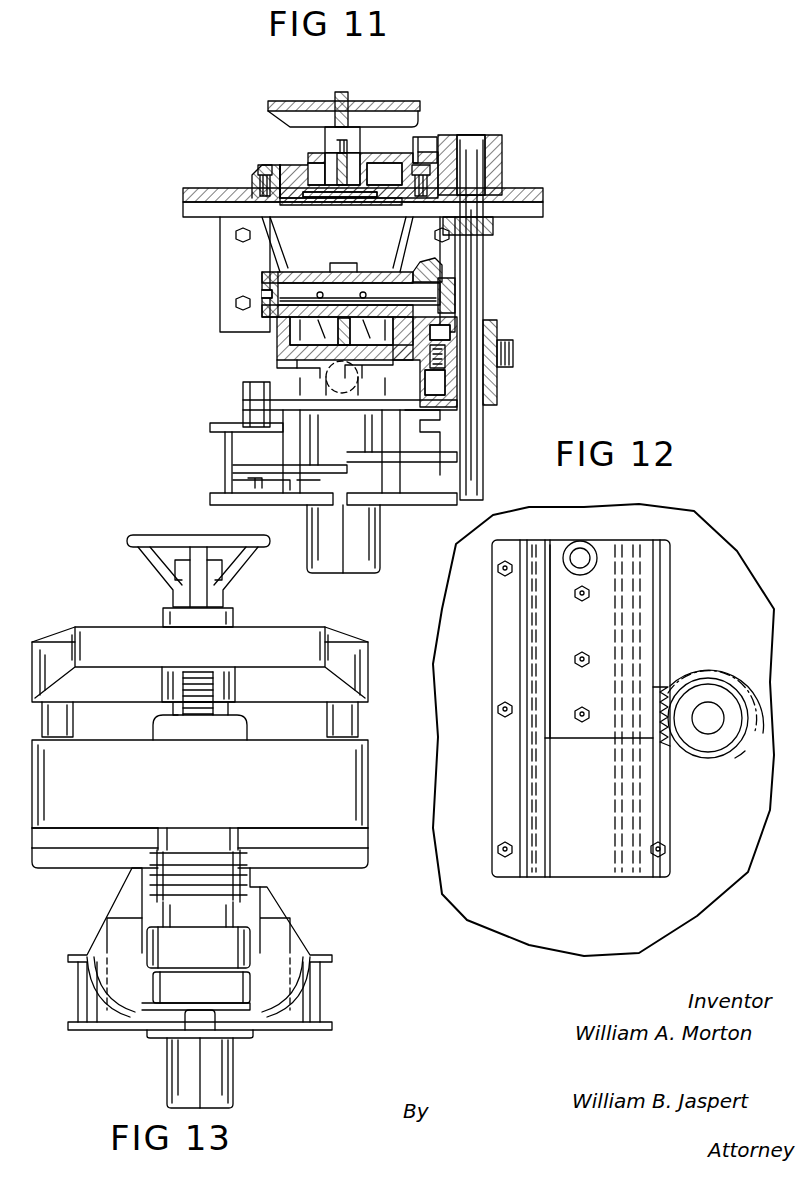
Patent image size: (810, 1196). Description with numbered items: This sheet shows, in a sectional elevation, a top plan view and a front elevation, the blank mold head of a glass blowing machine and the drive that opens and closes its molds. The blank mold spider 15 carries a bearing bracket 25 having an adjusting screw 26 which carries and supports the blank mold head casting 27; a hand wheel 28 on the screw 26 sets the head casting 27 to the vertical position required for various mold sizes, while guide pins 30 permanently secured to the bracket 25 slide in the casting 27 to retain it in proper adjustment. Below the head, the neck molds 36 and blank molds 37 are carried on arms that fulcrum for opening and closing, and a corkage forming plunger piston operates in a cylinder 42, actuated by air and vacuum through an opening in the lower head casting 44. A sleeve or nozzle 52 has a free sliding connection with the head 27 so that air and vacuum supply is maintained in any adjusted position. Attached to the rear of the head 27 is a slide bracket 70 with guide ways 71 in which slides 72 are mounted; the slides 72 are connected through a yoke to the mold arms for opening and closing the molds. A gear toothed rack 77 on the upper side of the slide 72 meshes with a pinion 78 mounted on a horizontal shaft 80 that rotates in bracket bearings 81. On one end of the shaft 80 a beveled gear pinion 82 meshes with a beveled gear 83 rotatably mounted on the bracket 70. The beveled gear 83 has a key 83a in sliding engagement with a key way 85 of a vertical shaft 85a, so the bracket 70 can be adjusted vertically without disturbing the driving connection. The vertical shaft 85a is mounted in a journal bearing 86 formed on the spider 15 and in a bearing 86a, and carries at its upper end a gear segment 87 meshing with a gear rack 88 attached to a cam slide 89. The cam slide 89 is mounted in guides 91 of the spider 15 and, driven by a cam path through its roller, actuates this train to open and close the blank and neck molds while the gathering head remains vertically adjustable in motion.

In FIG. 11, the blank mold spider 15 is at (525, 190).
In FIG. 13, the bearing bracket 25 is at (330, 645).
In FIG. 13, the adjusting screw 26 is at (215, 710).
In FIG. 13, the blank mold head casting 27 is at (280, 750).
In FIG. 13, the hand wheel 28 is at (145, 537).
In FIG. 13, the guide pins 30 is at (90, 722).
In FIG. 13, the neck molds 36 is at (160, 986).
In FIG. 11, the blank molds 37 is at (378, 548).
In FIG. 13, the blank molds 37 is at (170, 1058).
In FIG. 13, the cylinder 42 is at (215, 878).
In FIG. 13, the lower head casting 44 is at (270, 910).
In FIG. 13, the sleeve or nozzle 52 is at (172, 712).
In FIG. 11, the slide bracket 70 is at (290, 245).
In FIG. 11, the guide ways 71 is at (277, 340).
In FIG. 11, the slides 72 is at (280, 362).
In FIG. 11, the gear toothed rack 77 is at (365, 305).
In FIG. 11, the pinion 78 is at (340, 262).
In FIG. 11, the horizontal shaft 80 is at (262, 288).
In FIG. 11, the bracket bearings 81 is at (265, 270).
In FIG. 11, the beveled gear pinion 82 is at (438, 270).
In FIG. 11, the beveled gear 83 is at (430, 322).
In FIG. 11, the key 83a is at (447, 355).
In FIG. 11, the key way 85 is at (483, 490).
In FIG. 12, the key way 85 is at (712, 730).
In FIG. 11, the vertical shaft 85a is at (472, 450).
In FIG. 11, the journal bearing 86 is at (493, 230).
In FIG. 11, the bearing 86a is at (497, 388).
In FIG. 11, the gear segment 87 is at (438, 160).
In FIG. 12, the gear segment 87 is at (718, 678).
In FIG. 11, the gear rack 88 is at (418, 148).
In FIG. 12, the gear rack 88 is at (655, 665).
In FIG. 11, the cam slide 89 is at (300, 160).
In FIG. 12, the cam slide 89 is at (612, 728).
In FIG. 11, the guides 91 is at (264, 162).
In FIG. 12, the guides 91 is at (538, 772).